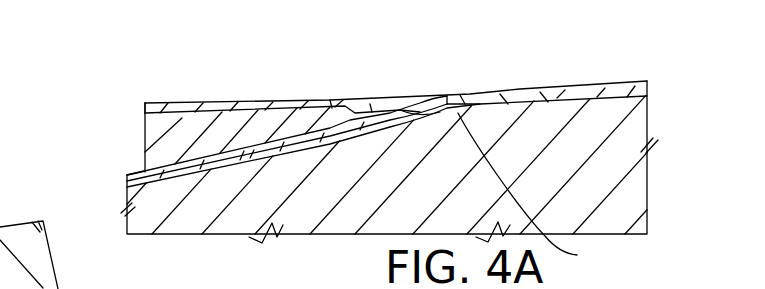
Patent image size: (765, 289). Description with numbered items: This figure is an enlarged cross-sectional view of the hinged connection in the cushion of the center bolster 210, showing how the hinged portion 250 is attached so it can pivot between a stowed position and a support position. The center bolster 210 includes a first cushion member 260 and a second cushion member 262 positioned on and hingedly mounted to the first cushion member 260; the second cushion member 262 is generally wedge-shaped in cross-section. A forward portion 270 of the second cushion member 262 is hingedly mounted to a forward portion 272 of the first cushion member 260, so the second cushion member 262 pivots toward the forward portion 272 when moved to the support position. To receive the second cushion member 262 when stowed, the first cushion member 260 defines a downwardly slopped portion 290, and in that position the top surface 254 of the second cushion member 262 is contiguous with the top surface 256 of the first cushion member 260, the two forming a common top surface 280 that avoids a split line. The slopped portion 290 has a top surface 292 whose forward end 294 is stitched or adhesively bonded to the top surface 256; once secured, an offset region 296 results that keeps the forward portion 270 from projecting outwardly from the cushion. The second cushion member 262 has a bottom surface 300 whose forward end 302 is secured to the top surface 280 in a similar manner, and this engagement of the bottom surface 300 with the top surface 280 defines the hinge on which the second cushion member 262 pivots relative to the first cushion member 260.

The center bolster 210 is at (635, 73).
The hinged portion 250 is at (155, 101).
The top surface of the hinged portion 254 is at (180, 106).
The top surface of the first cushion member 256 is at (580, 88).
The first cushion member 260 is at (522, 107).
The second cushion member 262 is at (240, 120).
The forward portion of the second cushion member 270 is at (373, 100).
The forward portion of the first cushion member 272 is at (442, 98).
The common top surface 280 is at (331, 98).
The downwardly slopped portion 290 is at (140, 172).
The top surface of the slopped portion 292 is at (258, 160).
The forward end of top surface 294 is at (545, 193).
The offset region 296 is at (357, 200).
The bottom surface of the second cushion member 300 is at (190, 172).
The forward end of the bottom surface 302 is at (380, 107).